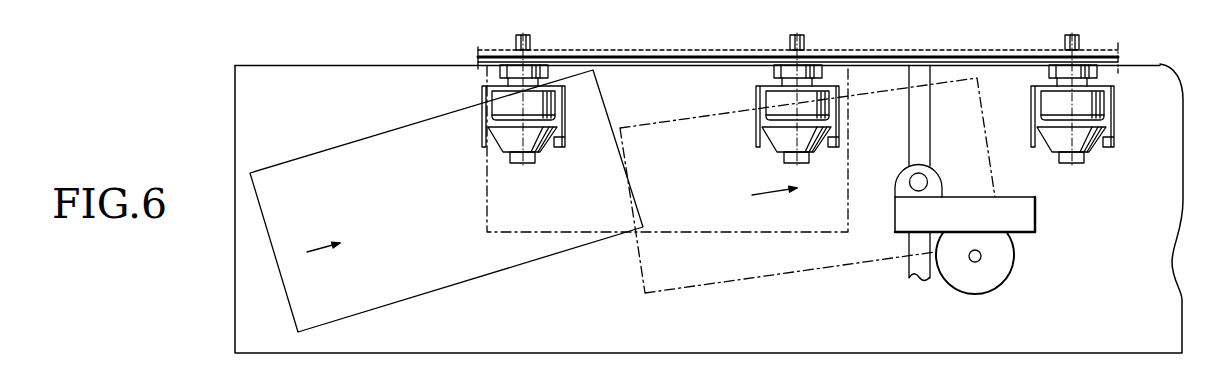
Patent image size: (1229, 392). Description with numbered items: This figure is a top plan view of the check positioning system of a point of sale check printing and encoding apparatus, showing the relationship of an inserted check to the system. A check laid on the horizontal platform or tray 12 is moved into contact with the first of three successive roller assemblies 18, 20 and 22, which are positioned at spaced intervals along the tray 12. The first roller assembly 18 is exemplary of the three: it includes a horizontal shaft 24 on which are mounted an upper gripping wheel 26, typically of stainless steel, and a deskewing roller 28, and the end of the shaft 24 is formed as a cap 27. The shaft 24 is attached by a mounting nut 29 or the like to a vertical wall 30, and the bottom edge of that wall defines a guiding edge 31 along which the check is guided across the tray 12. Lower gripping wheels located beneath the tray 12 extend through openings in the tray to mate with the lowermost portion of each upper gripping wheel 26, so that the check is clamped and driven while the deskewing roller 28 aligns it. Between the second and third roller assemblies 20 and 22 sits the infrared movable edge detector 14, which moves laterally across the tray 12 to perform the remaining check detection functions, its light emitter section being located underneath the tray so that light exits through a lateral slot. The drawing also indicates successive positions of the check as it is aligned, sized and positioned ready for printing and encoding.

The horizontal platform or tray 12 is at (403, 85).
The movable edge detector 14 is at (1024, 184).
The first roller assembly 18 is at (533, 99).
The second roller assembly 20 is at (775, 99).
The third roller assembly 22 is at (1070, 99).
The horizontal shaft 24 is at (529, 40).
The upper gripping wheel 26 is at (550, 108).
The cap 27 is at (525, 164).
The deskewing roller 28 is at (552, 143).
The mounting nut 29 is at (543, 67).
The vertical wall 30 is at (625, 50).
The guiding edge 31 is at (693, 65).